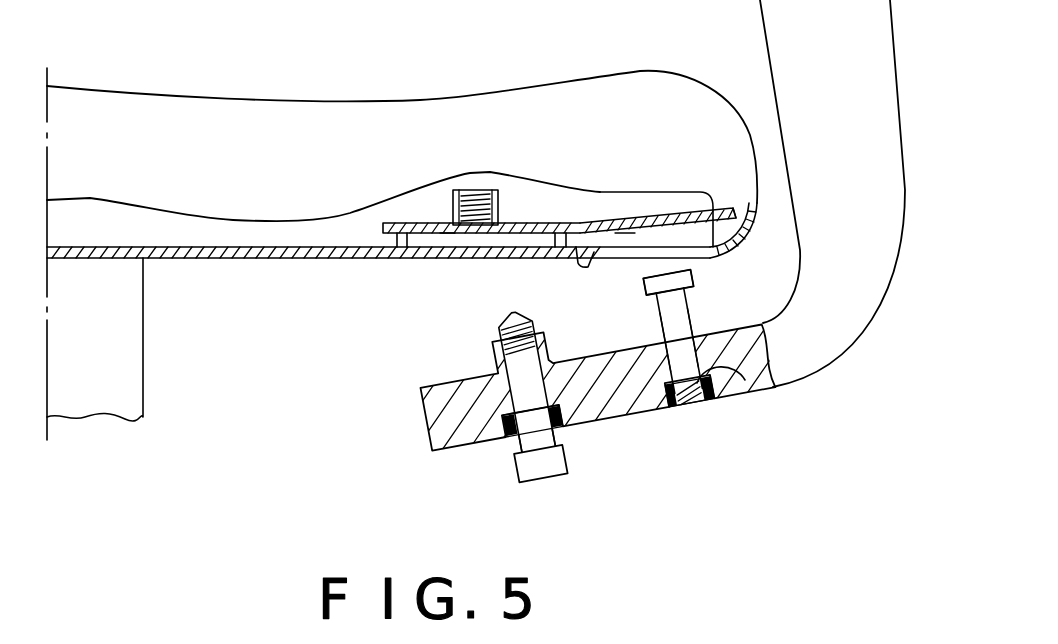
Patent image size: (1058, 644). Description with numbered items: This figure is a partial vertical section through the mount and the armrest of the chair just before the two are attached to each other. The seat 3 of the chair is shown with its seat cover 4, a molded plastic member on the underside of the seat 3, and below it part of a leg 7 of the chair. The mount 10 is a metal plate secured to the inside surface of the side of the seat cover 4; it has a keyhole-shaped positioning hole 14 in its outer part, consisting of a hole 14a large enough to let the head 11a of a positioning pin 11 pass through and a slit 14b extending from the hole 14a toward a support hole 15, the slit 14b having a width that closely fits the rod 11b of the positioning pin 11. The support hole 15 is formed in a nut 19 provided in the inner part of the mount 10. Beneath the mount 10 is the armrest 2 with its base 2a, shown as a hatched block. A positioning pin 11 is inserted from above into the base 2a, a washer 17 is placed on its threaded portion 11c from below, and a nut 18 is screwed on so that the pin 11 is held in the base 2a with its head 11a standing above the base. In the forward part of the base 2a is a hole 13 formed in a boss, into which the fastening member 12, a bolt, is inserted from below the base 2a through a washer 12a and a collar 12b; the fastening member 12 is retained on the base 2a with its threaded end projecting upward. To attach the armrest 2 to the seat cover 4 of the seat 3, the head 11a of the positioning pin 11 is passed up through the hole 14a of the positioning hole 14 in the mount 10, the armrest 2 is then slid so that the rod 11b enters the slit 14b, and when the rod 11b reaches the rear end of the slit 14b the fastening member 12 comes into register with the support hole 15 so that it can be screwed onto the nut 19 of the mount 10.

The armrest 2 is at (790, 44).
The base 2a is at (620, 397).
The seat 3 is at (318, 132).
The seat cover 4 is at (238, 258).
The leg 7 is at (120, 365).
The mount 10 is at (590, 220).
The positioning pin 11 is at (706, 299).
The head 11a is at (660, 286).
The rod 11b is at (672, 322).
The threaded portion 11c is at (692, 400).
The fastening member 12 is at (508, 466).
The washer 12a is at (550, 425).
The collar 12b is at (430, 418).
The hole 13 is at (493, 347).
The positioning hole 14 is at (647, 218).
The hole 14a is at (697, 208).
The slit 14b is at (626, 220).
The support hole 15 is at (475, 197).
The washer 17 is at (748, 385).
The nut 18 is at (673, 405).
The nut 19 is at (450, 212).